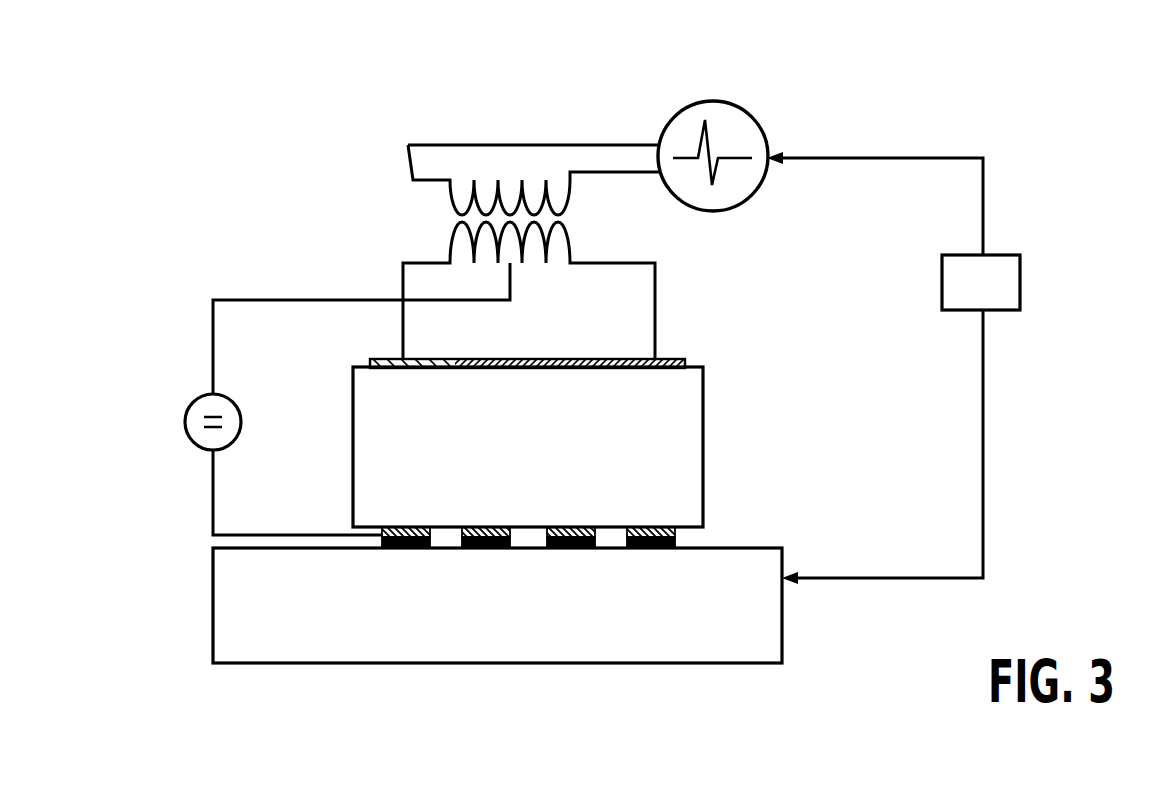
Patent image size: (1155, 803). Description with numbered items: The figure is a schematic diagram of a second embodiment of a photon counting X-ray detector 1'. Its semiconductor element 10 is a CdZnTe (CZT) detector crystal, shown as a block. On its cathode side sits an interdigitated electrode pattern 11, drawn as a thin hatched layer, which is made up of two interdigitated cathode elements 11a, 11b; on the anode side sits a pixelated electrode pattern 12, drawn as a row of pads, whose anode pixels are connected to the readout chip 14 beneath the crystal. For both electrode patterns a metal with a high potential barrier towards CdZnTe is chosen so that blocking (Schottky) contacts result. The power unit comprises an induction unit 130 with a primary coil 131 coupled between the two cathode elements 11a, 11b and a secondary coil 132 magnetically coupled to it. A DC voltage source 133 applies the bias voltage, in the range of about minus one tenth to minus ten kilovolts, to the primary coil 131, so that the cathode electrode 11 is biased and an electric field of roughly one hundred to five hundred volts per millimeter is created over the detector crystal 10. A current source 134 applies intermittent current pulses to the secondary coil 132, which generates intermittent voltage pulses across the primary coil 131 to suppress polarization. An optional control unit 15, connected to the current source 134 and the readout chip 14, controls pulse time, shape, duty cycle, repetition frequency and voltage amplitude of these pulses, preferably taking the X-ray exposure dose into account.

The X-ray detector 1' is at (173, 84).
The semiconductor element 10 is at (703, 457).
The interdigitated electrode pattern 11 is at (542, 314).
The interdigitated cathode element 11a is at (372, 358).
The interdigitated cathode element 11b is at (660, 358).
The pixelated electrode pattern 12 is at (719, 538).
The readout chip 14 is at (213, 600).
The control unit 15 is at (1010, 312).
The induction unit 130 is at (477, 252).
The primary coil 131 is at (450, 244).
The secondary coil 132 is at (447, 190).
The DC voltage source 133 is at (185, 420).
The current source 134 is at (758, 122).